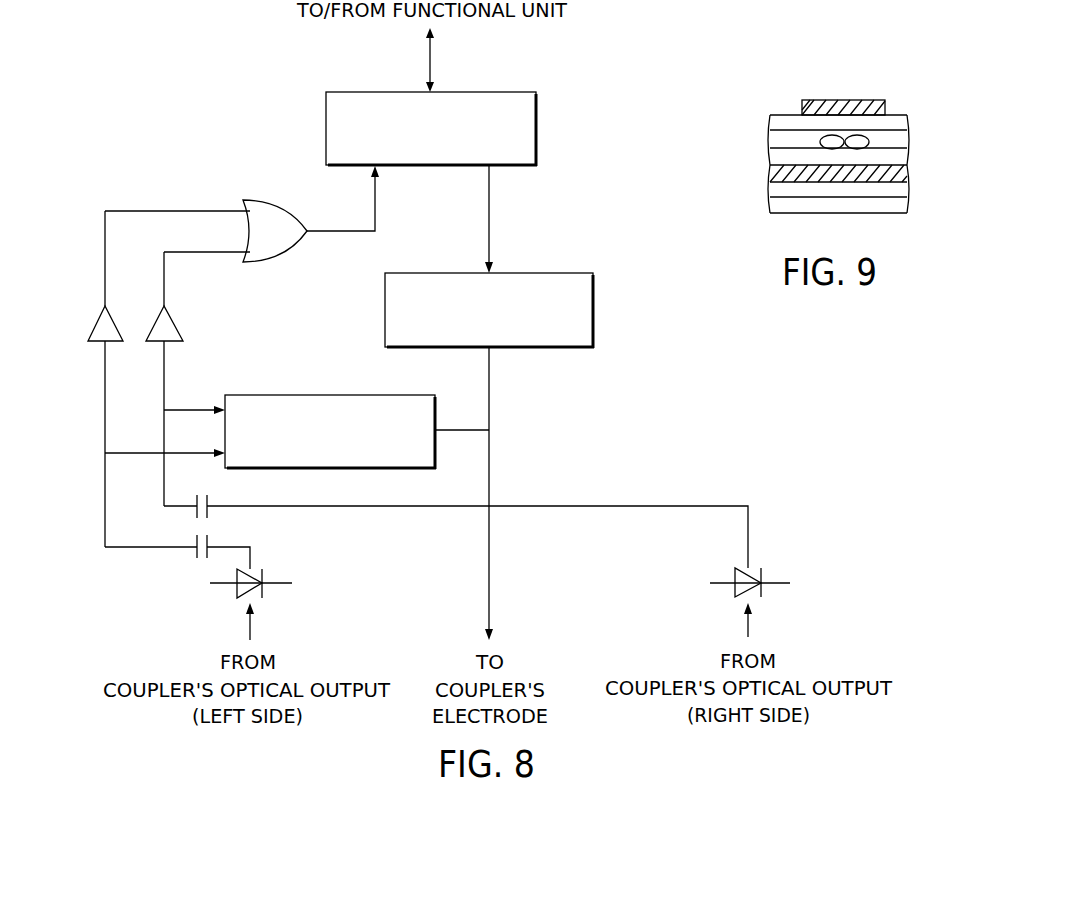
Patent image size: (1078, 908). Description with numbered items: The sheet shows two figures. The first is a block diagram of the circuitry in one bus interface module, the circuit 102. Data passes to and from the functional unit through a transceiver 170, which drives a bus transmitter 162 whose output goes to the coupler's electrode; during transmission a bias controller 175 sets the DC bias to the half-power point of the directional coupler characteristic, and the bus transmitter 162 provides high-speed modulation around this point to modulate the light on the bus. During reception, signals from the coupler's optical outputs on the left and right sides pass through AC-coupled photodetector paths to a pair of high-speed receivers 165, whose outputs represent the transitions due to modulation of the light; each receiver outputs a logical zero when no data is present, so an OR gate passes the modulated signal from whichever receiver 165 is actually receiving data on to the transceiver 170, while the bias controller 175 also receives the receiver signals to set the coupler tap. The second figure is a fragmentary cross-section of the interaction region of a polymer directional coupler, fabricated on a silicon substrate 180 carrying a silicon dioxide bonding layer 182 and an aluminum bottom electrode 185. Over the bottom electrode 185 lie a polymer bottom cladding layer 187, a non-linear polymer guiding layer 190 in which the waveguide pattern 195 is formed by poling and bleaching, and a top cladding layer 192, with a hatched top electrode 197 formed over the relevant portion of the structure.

In FIG. 8, the transceiver 170 is at (487, 92).
In FIG. 8, the guiding layer 190 is at (273, 200).
In FIG. 9, the guiding layer 190 is at (770, 138).
In FIG. 8, the high-speed receivers 165 is at (95, 325).
In FIG. 8, the bias controller 175 is at (335, 395).
In FIG. 8, the bus transmitter 162 is at (540, 273).
In FIG. 8, the circuit 102 is at (140, 619).
In FIG. 9, the top cladding layer 192 is at (770, 120).
In FIG. 9, the top electrode 197 is at (858, 100).
In FIG. 9, the waveguide pattern 195 is at (857, 136).
In FIG. 9, the bottom cladding layer 187 is at (770, 158).
In FIG. 9, the bottom electrode 185 is at (770, 172).
In FIG. 9, the silicon dioxide bonding layer 182 is at (770, 190).
In FIG. 9, the silicon substrate 180 is at (770, 205).